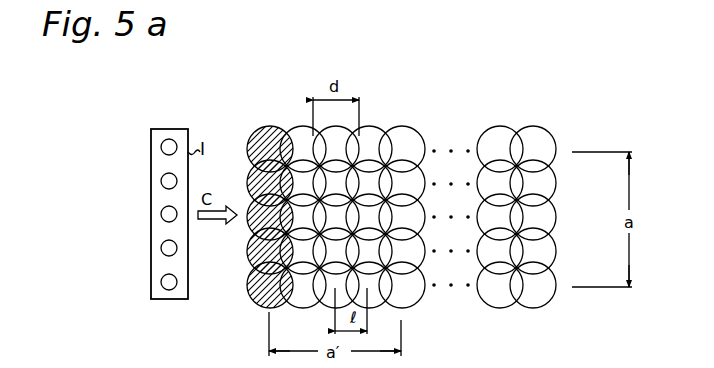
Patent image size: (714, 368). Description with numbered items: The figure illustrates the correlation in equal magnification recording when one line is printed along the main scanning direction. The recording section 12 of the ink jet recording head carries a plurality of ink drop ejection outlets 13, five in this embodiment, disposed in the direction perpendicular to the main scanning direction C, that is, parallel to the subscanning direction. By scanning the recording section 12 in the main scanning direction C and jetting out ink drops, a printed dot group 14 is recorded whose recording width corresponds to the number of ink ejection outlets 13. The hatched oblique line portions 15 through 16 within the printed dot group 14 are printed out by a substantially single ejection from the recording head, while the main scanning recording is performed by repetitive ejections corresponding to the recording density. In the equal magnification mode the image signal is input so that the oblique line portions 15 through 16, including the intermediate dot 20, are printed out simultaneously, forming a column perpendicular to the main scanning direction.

The recording section 12 is at (188, 129).
The ink drop ejection outlet 13 is at (161, 147).
The printed dot group 14 is at (378, 127).
The oblique line portion 15 is at (272, 127).
The oblique line portion 16 is at (255, 305).
The dot 20 is at (251, 266).